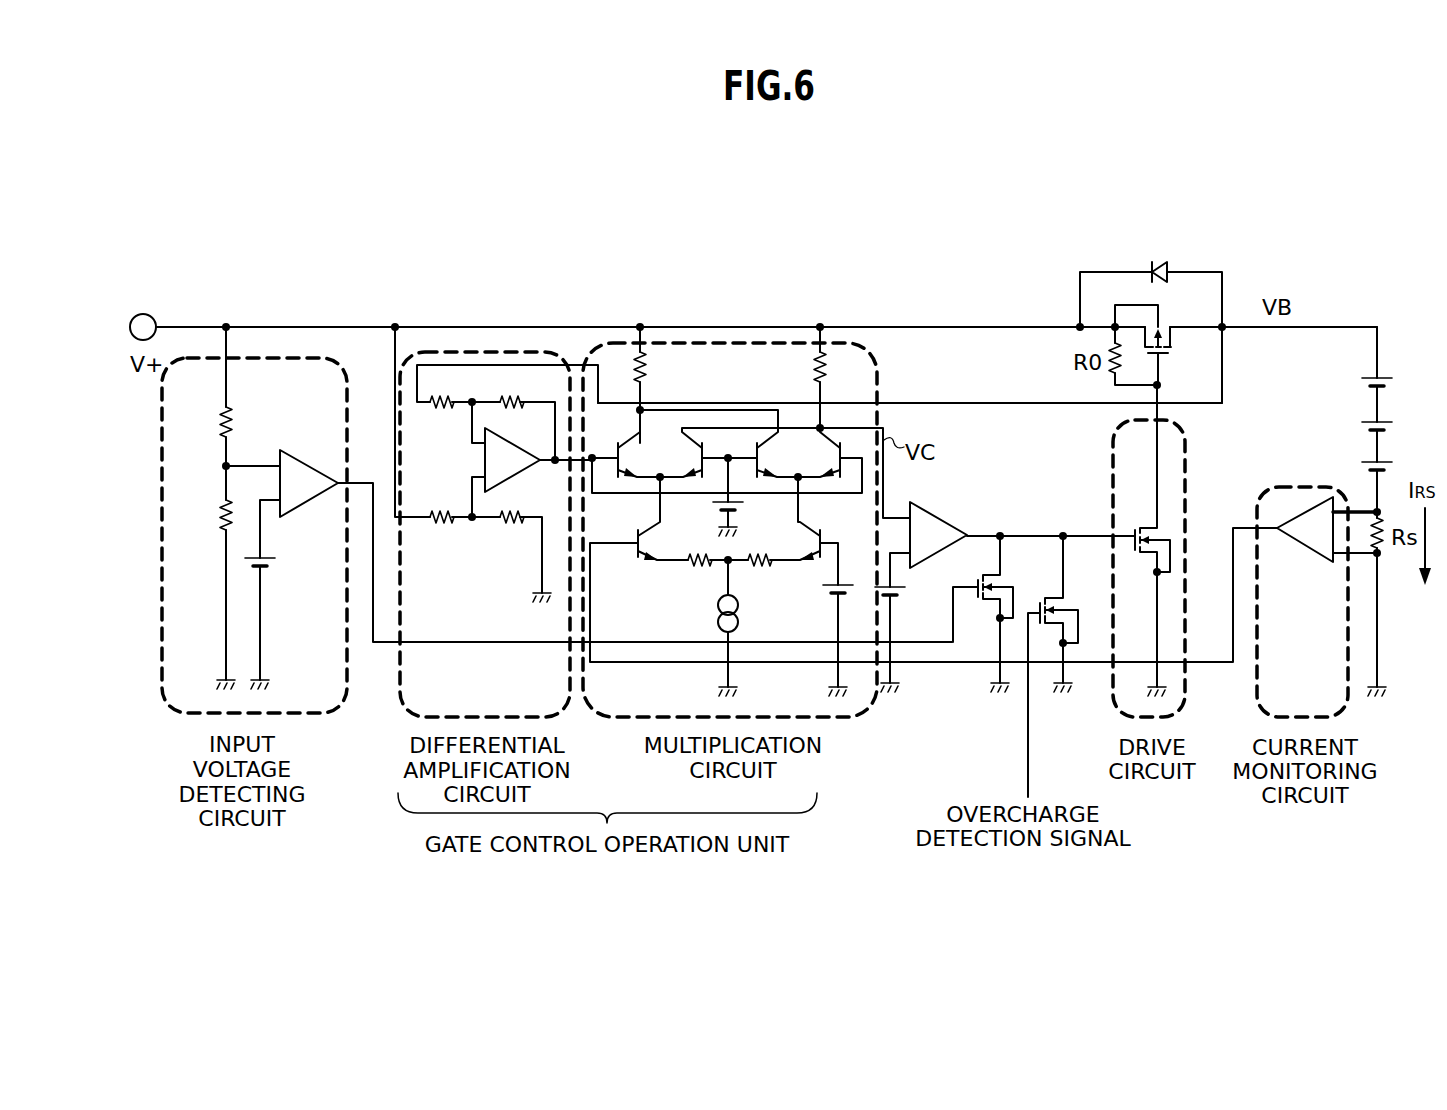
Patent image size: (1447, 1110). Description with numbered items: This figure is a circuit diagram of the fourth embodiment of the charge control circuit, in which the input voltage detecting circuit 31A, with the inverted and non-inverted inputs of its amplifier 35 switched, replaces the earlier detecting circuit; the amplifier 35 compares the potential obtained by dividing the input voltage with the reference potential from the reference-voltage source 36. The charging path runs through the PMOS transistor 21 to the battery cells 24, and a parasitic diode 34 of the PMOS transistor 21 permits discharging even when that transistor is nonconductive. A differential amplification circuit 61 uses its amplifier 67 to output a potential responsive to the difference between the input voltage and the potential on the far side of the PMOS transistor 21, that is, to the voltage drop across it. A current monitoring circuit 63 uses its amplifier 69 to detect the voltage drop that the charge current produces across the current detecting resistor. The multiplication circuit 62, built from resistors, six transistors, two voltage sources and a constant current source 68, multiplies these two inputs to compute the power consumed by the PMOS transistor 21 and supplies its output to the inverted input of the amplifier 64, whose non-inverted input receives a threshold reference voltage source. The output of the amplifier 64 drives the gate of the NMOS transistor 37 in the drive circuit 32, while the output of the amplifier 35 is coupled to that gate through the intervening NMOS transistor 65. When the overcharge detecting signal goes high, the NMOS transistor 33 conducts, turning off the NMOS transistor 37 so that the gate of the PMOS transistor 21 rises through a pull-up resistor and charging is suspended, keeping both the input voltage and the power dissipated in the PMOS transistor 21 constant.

The input voltage detecting circuit 31A is at (543, 545).
The amplifier 35 is at (300, 463).
The reference-voltage source 36 is at (282, 571).
The differential amplification circuit 61 is at (480, 540).
The amplifier 67 is at (522, 475).
The multiplication circuit 62 is at (930, 540).
The constant current source 68 is at (708, 613).
The amplifier 64 is at (932, 513).
The NMOS transistor 65 is at (974, 614).
The NMOS transistor 33 is at (1032, 596).
The parasitic diode 34 is at (1160, 246).
The PMOS transistor 21 is at (1185, 354).
The secondary battery 24 is at (1410, 426).
The drive circuit 32 is at (1125, 556).
The NMOS transistor 37 is at (1130, 568).
The current monitoring circuit 63 is at (1291, 607).
The amplifier 69 is at (1299, 560).